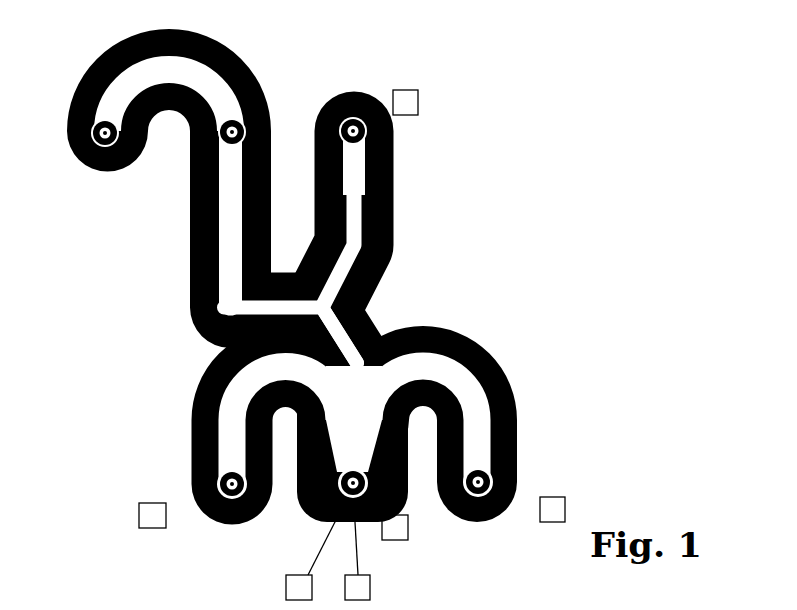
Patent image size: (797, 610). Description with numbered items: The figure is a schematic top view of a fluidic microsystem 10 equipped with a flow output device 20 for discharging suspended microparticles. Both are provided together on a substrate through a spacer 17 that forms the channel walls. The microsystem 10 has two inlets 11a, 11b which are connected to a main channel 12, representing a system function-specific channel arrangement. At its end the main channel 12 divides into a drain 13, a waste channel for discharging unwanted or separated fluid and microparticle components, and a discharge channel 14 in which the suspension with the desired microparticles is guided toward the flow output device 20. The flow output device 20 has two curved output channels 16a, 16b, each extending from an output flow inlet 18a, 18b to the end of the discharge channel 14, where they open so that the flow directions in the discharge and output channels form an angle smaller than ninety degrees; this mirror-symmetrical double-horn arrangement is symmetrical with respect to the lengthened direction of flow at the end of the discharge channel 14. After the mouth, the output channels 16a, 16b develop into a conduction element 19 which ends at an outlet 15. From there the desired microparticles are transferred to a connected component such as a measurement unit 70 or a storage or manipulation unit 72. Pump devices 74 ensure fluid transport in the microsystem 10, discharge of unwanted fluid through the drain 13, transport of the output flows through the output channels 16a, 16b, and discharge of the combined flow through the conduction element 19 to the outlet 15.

The fluidic microsystem 10 is at (365, 77).
The inlet 11a is at (87, 76).
The inlet 11b is at (267, 105).
The main channel 12 is at (276, 308).
The drain 13 is at (392, 157).
The discharge channel 14 is at (379, 331).
The outlet 15 is at (352, 478).
The output channel 16a is at (233, 437).
The output channel 16b is at (468, 427).
The spacer 17 is at (449, 326).
The output flow inlet 18a is at (193, 464).
The output flow inlet 18b is at (518, 473).
The conduction element 19 is at (340, 466).
The flow output device 20 is at (556, 436).
The measurement unit 70 is at (285, 589).
The manipulation unit 72 is at (371, 587).
The pump device 74 is at (418, 102).